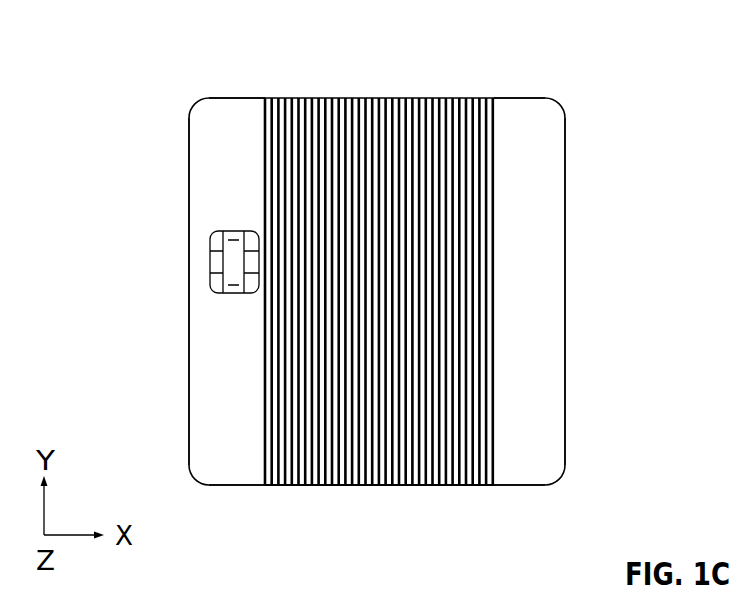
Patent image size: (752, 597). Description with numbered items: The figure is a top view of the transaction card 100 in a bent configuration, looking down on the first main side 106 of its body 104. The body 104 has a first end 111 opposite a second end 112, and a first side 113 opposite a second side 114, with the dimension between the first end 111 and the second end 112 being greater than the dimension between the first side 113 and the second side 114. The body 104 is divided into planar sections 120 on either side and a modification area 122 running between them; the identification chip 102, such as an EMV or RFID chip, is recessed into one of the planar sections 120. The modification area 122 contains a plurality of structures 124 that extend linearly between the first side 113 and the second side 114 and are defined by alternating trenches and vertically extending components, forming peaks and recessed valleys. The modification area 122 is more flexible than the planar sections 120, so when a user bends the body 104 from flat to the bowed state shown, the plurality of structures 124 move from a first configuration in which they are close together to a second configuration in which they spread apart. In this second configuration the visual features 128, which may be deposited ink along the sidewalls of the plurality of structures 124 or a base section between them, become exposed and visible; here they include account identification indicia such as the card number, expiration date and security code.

The transaction card 100 is at (114, 49).
The identification chip 102 is at (232, 222).
The body 104 is at (506, 94).
The first main side 106 is at (545, 236).
The first end 111 is at (170, 324).
The second end 112 is at (567, 284).
The first side 113 is at (225, 82).
The second side 114 is at (517, 488).
The planar section 120 is at (538, 356).
The modification area 122 is at (452, 95).
The plurality of structures 124 is at (437, 453).
The visual features 128 is at (397, 93).